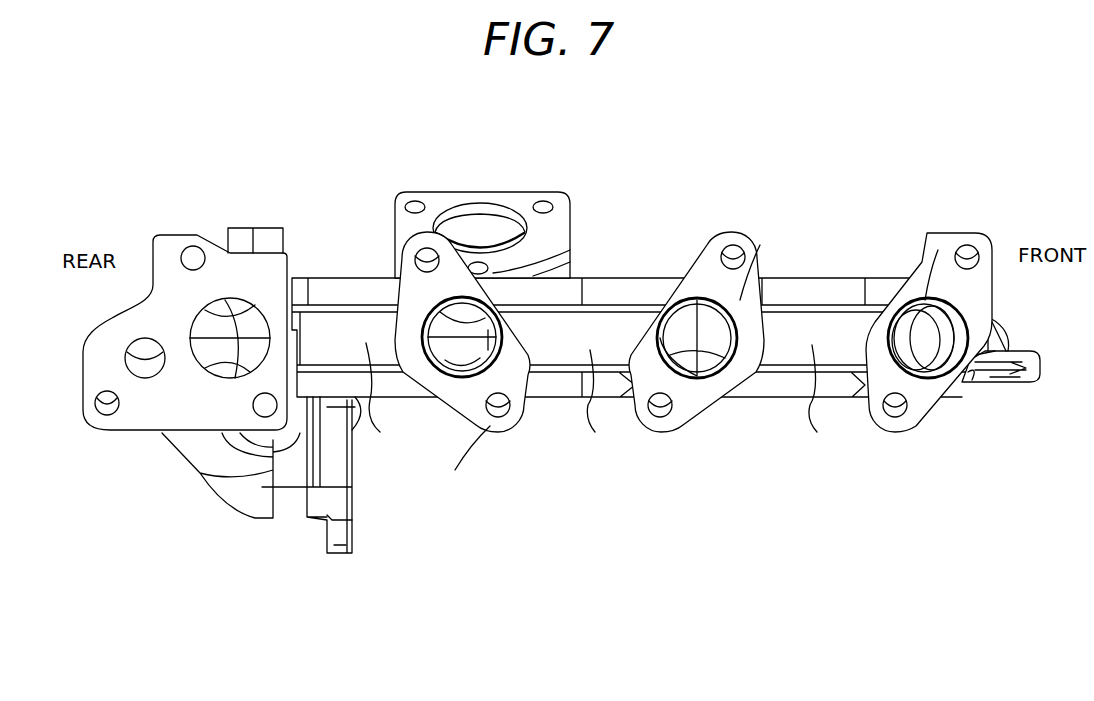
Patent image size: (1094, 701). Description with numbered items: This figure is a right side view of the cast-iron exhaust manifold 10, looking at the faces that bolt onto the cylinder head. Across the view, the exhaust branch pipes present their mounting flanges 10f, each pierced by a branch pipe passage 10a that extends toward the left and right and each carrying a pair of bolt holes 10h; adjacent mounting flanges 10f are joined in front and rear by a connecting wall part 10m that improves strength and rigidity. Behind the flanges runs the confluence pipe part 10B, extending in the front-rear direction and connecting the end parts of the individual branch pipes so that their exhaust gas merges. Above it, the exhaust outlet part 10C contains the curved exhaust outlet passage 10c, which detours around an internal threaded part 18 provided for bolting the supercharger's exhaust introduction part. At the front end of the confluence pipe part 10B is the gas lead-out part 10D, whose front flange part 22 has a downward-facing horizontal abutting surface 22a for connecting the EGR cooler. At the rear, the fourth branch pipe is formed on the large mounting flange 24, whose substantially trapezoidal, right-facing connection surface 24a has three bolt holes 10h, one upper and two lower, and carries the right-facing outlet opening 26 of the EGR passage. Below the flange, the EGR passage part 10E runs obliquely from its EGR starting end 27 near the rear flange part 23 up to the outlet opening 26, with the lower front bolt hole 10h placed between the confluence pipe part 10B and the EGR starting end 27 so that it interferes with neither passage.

The exhaust manifold 10 is at (866, 184).
The branch pipe passage 10a is at (232, 357).
The exhaust outlet passage 10c is at (465, 238).
The exhaust outlet part 10C is at (510, 190).
The confluence pipe part 10B is at (628, 290).
The gas lead-out part 10D is at (1005, 340).
The EGR passage part 10E is at (193, 478).
The mounting flange 10f is at (757, 247).
The bolt hole 10h is at (200, 252).
The connecting wall part 10m is at (585, 405).
The internal threaded part 18 is at (398, 205).
The front flange part 22 is at (1028, 385).
The abutting surface 22a is at (992, 388).
The rear flange part 23 is at (342, 552).
The large mounting flange 24 is at (157, 234).
The connection surface 24a is at (188, 407).
The outlet opening 26 is at (128, 345).
The EGR starting end 27 is at (282, 508).